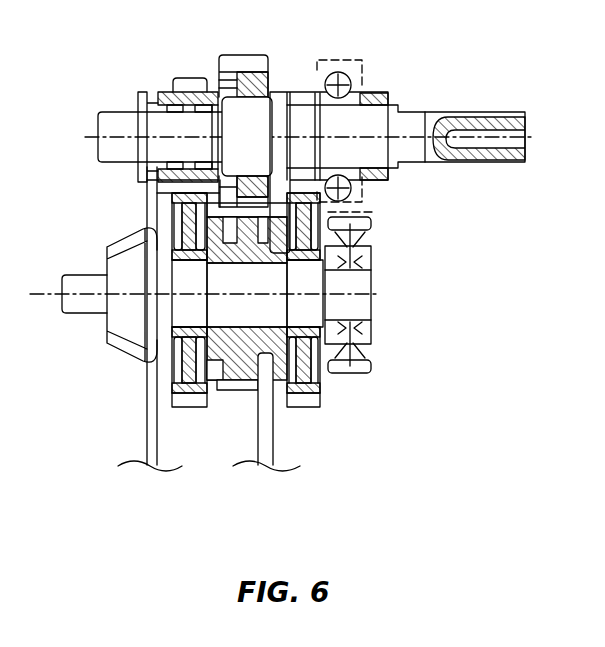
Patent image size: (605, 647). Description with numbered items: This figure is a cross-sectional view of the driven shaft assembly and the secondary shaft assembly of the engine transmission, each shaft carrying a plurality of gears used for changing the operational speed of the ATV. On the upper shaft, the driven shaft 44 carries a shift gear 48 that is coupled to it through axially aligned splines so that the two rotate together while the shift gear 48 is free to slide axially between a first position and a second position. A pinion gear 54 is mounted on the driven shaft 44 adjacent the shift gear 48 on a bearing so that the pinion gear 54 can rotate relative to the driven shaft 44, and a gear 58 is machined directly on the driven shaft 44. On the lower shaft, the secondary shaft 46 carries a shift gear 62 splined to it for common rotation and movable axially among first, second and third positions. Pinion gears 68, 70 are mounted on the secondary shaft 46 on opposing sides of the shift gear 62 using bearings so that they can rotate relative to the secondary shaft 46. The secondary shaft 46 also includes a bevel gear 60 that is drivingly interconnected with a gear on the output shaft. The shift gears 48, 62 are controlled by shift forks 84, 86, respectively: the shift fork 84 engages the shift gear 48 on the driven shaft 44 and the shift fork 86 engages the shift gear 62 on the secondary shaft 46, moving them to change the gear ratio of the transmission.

The driven shaft 44 is at (102, 125).
The shift gear 48 is at (183, 96).
The pinion gear 54 is at (248, 63).
The gear 58 is at (306, 102).
The bevel gear 60 is at (122, 256).
The secondary shaft 46 is at (70, 282).
The shift fork 84 is at (148, 380).
The pinion gear 68 is at (191, 395).
The shift gear 62 is at (236, 368).
The shift fork 86 is at (266, 406).
The pinion gear 70 is at (303, 398).